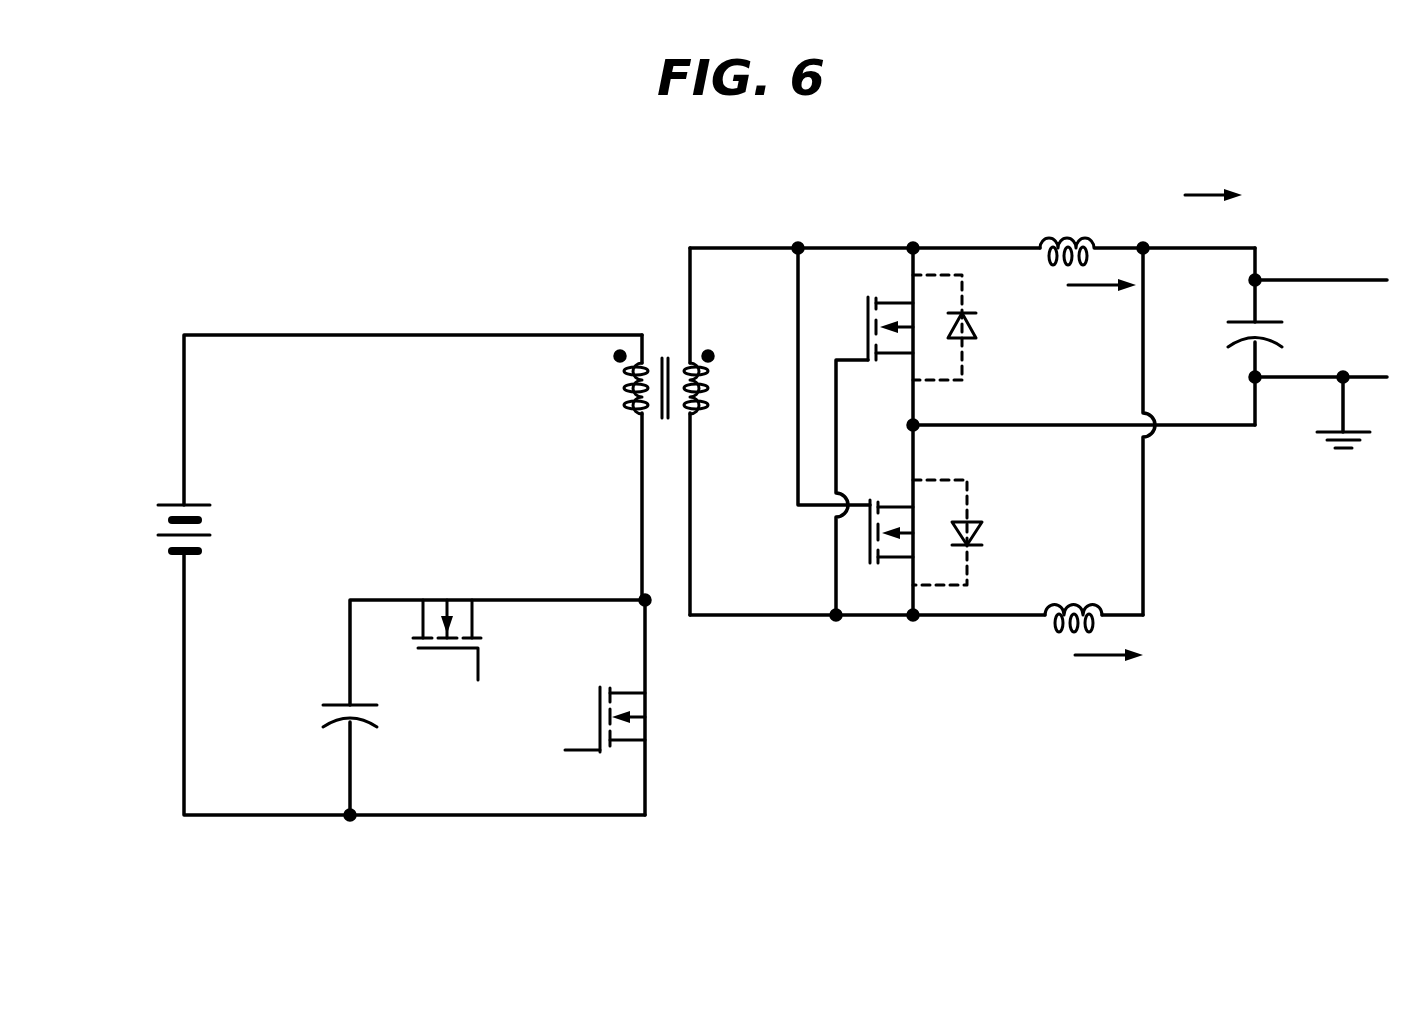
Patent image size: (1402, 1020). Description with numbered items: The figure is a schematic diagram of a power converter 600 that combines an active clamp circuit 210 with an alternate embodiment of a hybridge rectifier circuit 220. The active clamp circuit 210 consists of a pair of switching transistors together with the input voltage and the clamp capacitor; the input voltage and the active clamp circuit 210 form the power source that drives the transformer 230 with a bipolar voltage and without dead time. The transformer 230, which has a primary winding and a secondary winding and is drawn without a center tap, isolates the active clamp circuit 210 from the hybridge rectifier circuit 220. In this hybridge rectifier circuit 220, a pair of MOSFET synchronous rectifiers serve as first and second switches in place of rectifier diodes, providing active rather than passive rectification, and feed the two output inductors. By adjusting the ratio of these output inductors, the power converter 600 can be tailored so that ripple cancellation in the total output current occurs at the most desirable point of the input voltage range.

The active clamp circuit 210 is at (424, 312).
The hybridge rectifier circuit 220 is at (945, 228).
The transformer 230 is at (663, 318).
The power converter 600 is at (797, 811).